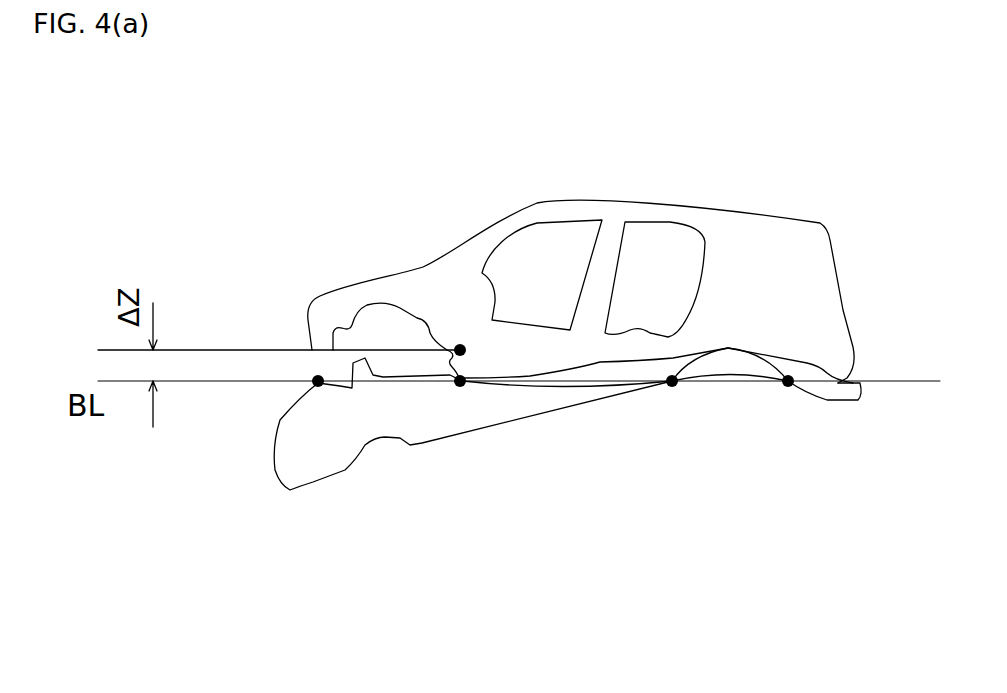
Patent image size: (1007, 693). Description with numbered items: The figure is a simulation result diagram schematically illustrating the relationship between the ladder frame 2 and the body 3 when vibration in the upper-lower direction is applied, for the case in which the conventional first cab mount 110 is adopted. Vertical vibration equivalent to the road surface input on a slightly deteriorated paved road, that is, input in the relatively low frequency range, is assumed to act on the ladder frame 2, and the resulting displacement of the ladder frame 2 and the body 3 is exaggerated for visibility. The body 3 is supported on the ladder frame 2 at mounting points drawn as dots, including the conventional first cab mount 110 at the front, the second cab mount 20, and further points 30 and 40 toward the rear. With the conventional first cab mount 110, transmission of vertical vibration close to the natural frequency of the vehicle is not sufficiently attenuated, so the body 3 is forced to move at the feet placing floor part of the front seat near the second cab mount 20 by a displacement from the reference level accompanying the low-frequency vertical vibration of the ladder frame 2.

The ladder frame 2 is at (525, 400).
The body 3 is at (705, 212).
The second cab mount 20 is at (460, 386).
The rear wheel front reference point 30 is at (673, 386).
The rear wheel rear reference point 40 is at (789, 386).
The conventional first cab mount 110 is at (310, 384).